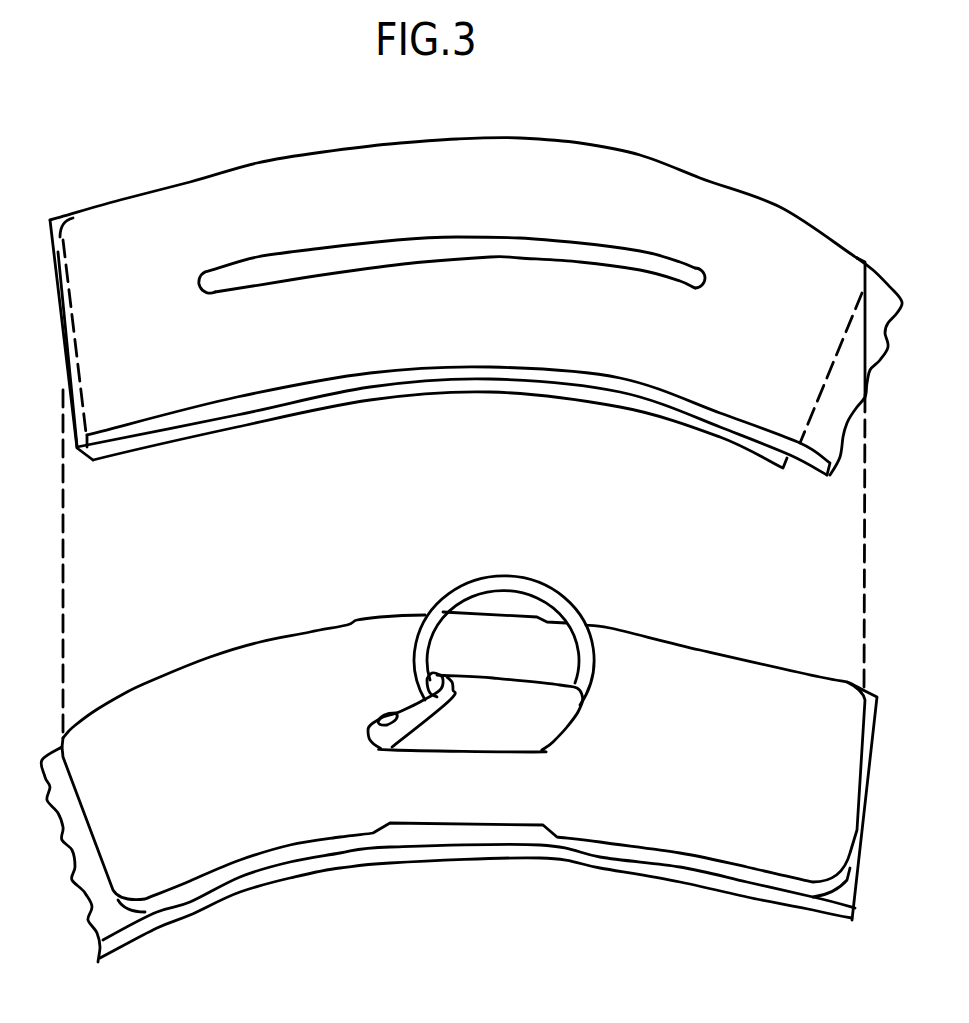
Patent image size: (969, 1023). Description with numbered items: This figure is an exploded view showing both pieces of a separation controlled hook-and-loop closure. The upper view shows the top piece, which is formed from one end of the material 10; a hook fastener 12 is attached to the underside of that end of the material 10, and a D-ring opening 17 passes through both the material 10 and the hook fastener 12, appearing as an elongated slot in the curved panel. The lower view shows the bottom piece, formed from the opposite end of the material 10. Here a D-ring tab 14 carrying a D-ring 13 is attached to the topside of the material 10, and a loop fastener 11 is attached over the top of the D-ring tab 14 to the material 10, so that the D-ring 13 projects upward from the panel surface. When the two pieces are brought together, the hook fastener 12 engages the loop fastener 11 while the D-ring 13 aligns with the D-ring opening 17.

The material 10 is at (587, 190).
The loop fastener 11 is at (633, 700).
The hook fastener 12 is at (183, 437).
The D-ring 13 is at (520, 572).
The D-ring tab 14 is at (567, 727).
The D-ring opening 17 is at (397, 237).